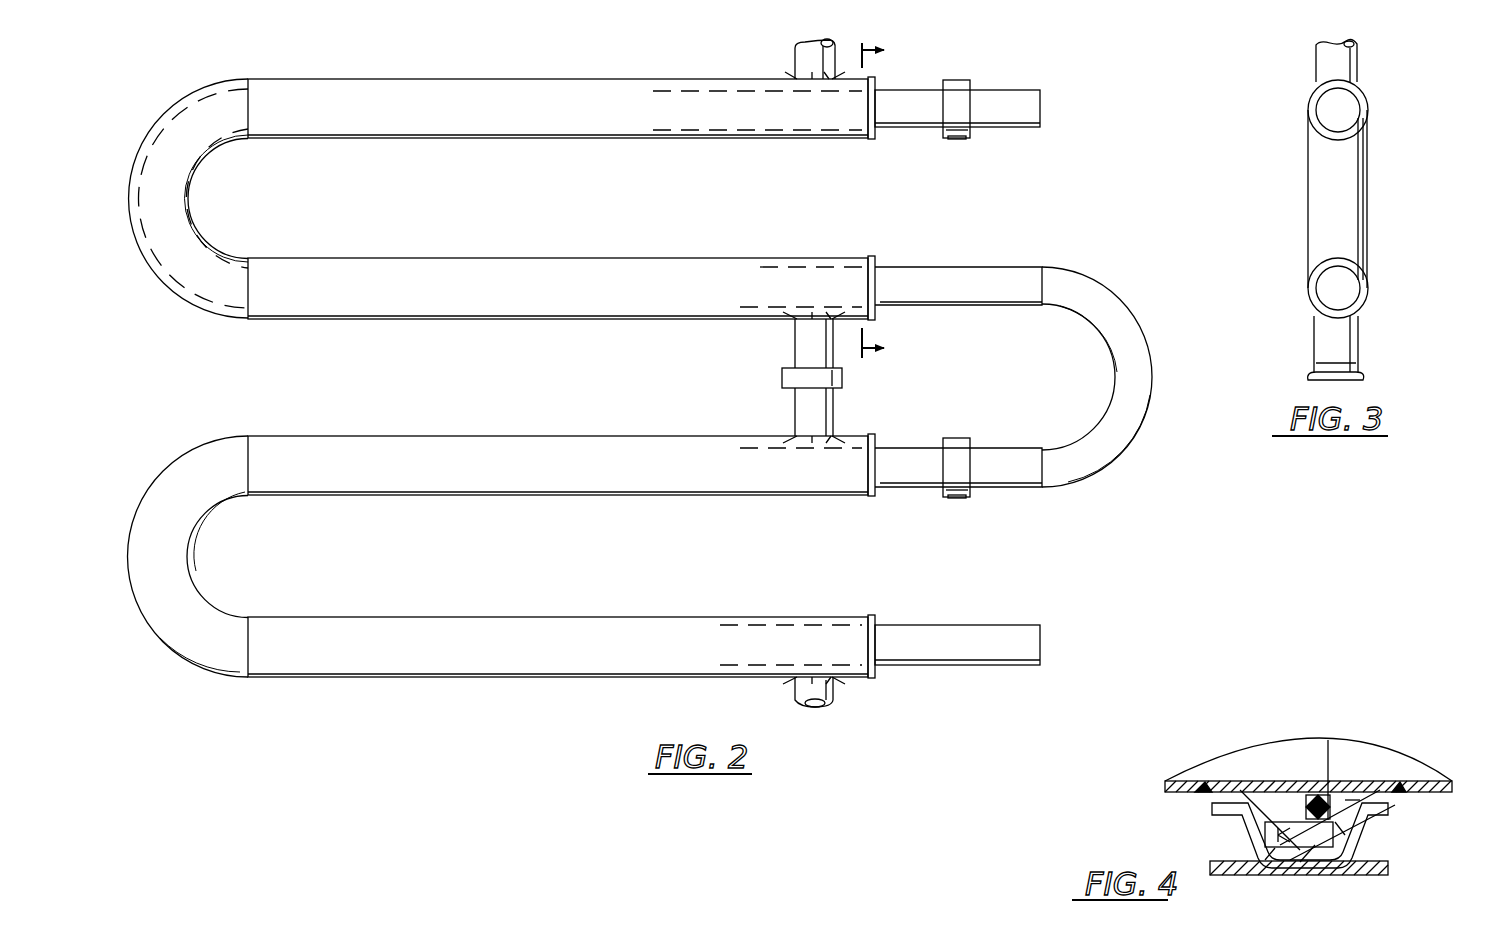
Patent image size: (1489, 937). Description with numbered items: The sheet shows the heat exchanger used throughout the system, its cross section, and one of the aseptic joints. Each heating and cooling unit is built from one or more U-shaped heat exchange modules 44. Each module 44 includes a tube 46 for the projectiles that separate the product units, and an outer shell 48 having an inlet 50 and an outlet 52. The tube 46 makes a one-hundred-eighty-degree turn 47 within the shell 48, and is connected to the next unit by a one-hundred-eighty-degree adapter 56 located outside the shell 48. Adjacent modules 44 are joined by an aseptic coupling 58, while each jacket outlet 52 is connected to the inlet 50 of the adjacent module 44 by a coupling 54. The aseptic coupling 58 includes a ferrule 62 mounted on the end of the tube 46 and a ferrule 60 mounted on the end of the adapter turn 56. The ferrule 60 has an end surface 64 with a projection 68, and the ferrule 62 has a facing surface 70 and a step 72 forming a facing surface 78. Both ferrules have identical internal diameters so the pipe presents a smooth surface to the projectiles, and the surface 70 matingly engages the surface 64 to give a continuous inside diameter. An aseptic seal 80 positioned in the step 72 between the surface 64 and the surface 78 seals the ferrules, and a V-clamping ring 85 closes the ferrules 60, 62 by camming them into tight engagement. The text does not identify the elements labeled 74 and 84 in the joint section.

In FIG. 2, the heat exchange module 44 is at (674, 364).
In FIG. 2, the tube 46 is at (916, 489).
In FIG. 3, the tube 46 is at (1330, 296).
In FIG. 4, the tube 46 is at (1172, 780).
In FIG. 2, the 180° turn 47 is at (190, 188).
In FIG. 3, the 180° turn 47 is at (1368, 173).
In FIG. 2, the outer shell 48 is at (292, 79).
In FIG. 3, the outer shell 48 is at (1368, 108).
In FIG. 2, the inlet 50 is at (796, 45).
In FIG. 3, the inlet 50 is at (1358, 63).
In FIG. 2, the outlet 52 is at (795, 348).
In FIG. 3, the outlet 52 is at (1358, 344).
In FIG. 4, the outlet 52 is at (1445, 780).
In FIG. 2, the coupling 54 is at (782, 378).
In FIG. 2, the 180° adapter 56 is at (1153, 392).
In FIG. 2, the aseptic coupling 58 is at (972, 78).
In FIG. 4, the aseptic coupling 58 is at (1205, 797).
In FIG. 4, the ferrule 60 is at (1333, 830).
In FIG. 4, the ferrule 62 is at (1268, 808).
In FIG. 4, the end surface 64 is at (1313, 790).
In FIG. 4, the projection 68 is at (1290, 858).
In FIG. 4, the facing surface 70 is at (1345, 790).
In FIG. 4, the step 72 is at (1262, 790).
In FIG. 4, the body 74 is at (1292, 835).
In FIG. 4, the facing surface 78 is at (1362, 800).
In FIG. 4, the aseptic seal 80 is at (1335, 812).
In FIG. 4, the passage 84 is at (1318, 830).
In FIG. 2, the V-clamping ring 85 is at (953, 138).
In FIG. 4, the V-clamping ring 85 is at (1380, 872).